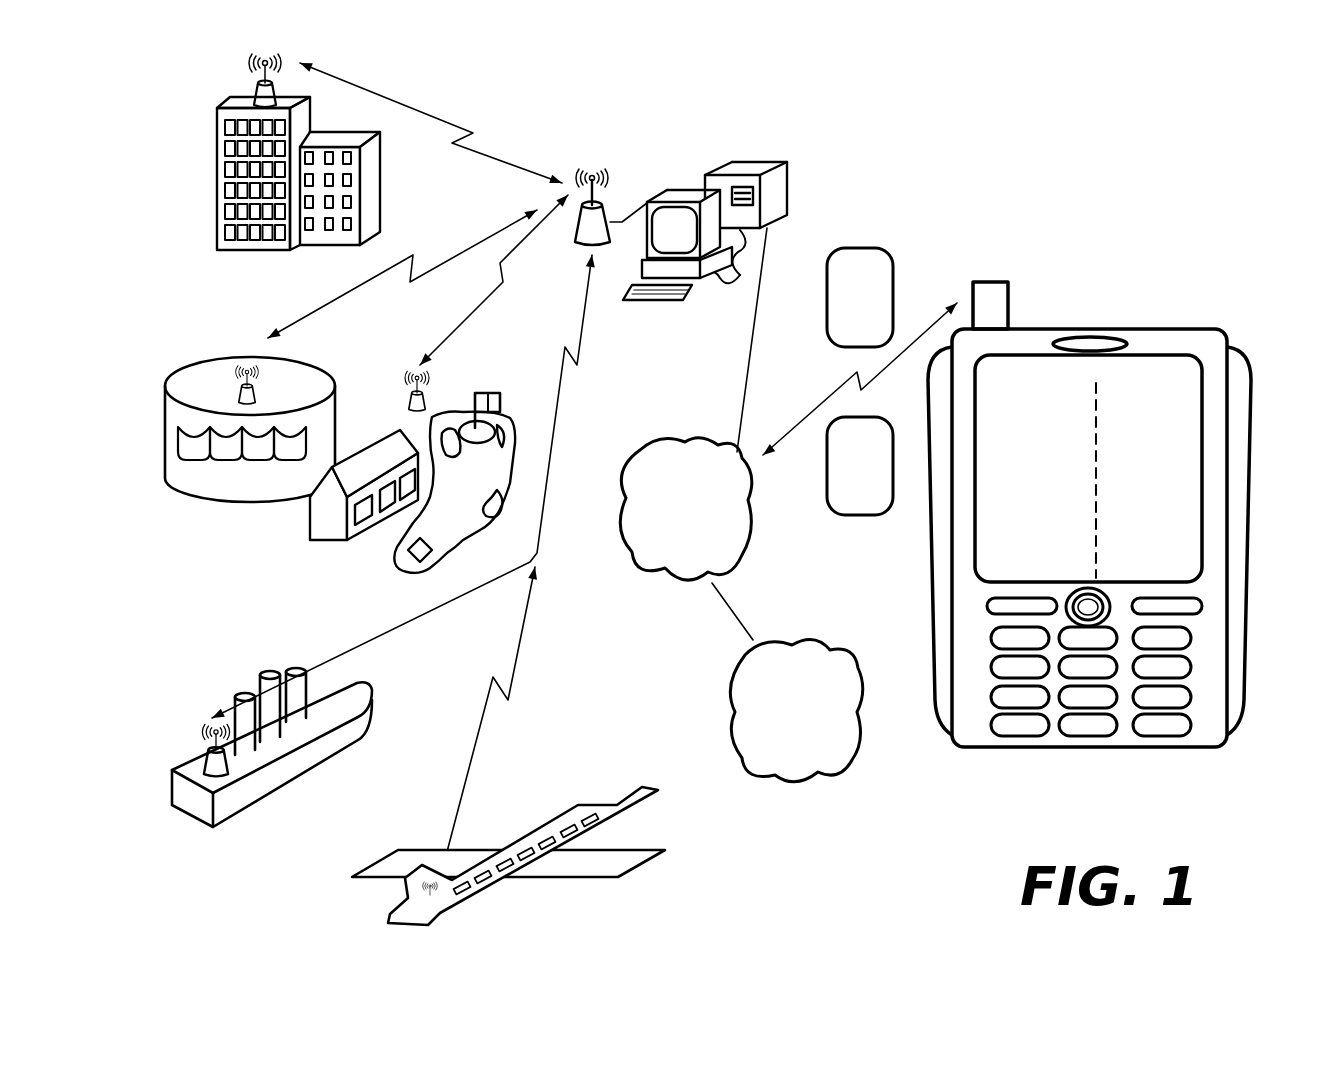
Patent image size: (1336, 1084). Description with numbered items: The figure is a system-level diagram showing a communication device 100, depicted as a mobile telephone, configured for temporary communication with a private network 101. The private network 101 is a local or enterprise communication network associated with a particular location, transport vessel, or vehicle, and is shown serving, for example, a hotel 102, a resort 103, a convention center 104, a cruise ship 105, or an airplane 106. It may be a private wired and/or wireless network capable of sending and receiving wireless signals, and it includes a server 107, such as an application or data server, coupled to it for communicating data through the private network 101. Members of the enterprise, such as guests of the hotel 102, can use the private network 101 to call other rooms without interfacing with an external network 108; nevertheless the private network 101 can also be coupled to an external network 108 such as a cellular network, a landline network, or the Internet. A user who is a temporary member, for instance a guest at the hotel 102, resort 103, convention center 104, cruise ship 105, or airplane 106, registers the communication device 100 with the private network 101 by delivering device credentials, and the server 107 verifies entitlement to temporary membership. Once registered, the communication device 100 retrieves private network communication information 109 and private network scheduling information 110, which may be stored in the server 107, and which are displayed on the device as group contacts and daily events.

The communication device 100 is at (1135, 329).
The private network 101 is at (632, 536).
The hotel 102 is at (215, 165).
The resort 103 is at (333, 540).
The convention center 104 is at (232, 358).
The cruise ship 105 is at (317, 753).
The airplane 106 is at (548, 830).
The server 107 is at (742, 163).
The external network 108 is at (835, 773).
The private network communication information 109 is at (855, 288).
The private network scheduling information 110 is at (847, 515).